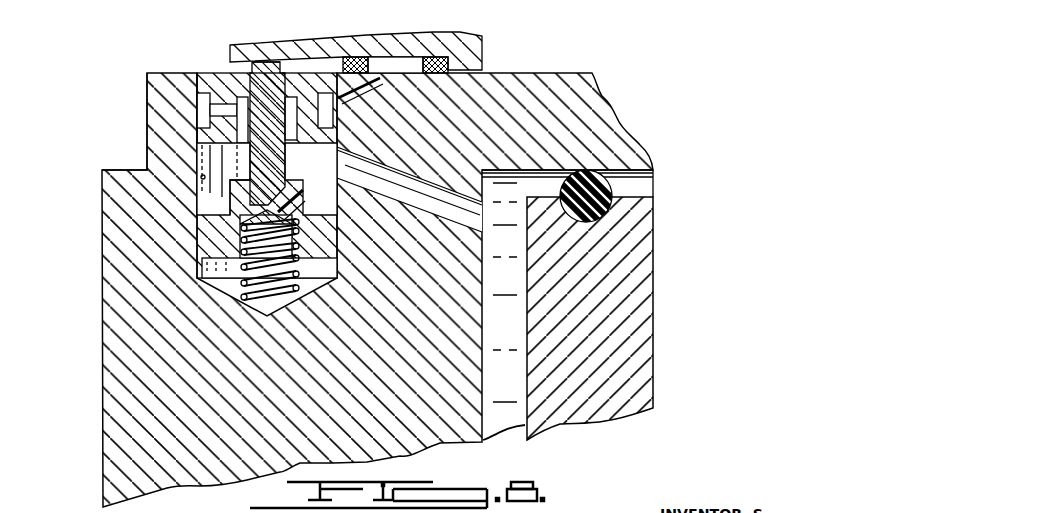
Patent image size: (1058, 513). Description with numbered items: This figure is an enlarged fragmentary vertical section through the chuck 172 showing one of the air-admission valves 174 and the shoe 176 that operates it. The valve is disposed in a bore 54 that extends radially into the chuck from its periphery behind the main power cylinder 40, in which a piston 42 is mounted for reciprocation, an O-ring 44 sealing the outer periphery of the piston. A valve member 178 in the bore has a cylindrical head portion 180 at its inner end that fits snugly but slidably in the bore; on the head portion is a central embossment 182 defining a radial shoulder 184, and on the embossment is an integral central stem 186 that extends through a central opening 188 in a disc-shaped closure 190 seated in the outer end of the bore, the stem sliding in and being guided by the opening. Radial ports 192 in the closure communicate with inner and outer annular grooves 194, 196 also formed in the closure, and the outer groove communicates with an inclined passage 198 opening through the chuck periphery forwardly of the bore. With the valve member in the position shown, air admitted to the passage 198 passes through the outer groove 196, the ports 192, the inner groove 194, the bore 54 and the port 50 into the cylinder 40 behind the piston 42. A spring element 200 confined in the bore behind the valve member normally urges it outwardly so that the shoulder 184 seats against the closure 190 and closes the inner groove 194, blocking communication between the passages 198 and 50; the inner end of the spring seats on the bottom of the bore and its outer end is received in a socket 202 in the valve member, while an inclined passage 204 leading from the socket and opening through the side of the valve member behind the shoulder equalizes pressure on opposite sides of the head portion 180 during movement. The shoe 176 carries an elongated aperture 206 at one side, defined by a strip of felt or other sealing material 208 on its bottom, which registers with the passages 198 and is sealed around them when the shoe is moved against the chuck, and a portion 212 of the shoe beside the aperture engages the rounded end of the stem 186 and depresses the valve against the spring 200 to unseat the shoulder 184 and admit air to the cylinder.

The chuck 172 is at (638, 68).
The valve 174 is at (196, 70).
The shoe 176 is at (352, 27).
The valve member 178 is at (300, 172).
The cylindrical head portion 180 is at (272, 244).
The central embossment 182 is at (238, 197).
The radial shoulder 184 is at (243, 177).
The central stem 186 is at (276, 131).
The central opening 188 is at (218, 87).
The disc-shaped closure 190 is at (250, 74).
The radial ports 192 is at (222, 110).
The inner annular groove 194 is at (344, 95).
The outer annular groove 196 is at (197, 122).
The inclined passage 198 is at (378, 87).
The spring element 200 is at (225, 292).
The socket 202 is at (247, 226).
The inclined passage 204 is at (303, 212).
The elongated slot or aperture 206 is at (400, 64).
The sealing strip 208 is at (400, 79).
The portion of the shoe 212 is at (246, 63).
The cylinder 40 is at (520, 336).
The piston 42 is at (630, 264).
The O-ring 44 is at (611, 188).
The port 50 is at (422, 183).
The bore 54 is at (202, 177).